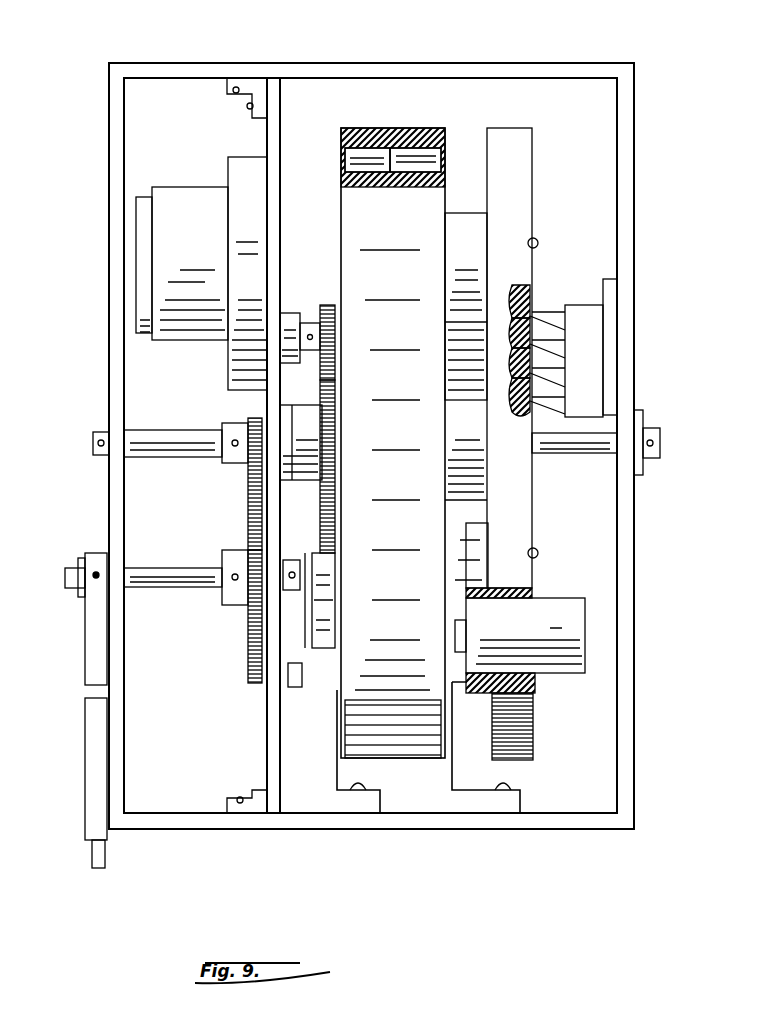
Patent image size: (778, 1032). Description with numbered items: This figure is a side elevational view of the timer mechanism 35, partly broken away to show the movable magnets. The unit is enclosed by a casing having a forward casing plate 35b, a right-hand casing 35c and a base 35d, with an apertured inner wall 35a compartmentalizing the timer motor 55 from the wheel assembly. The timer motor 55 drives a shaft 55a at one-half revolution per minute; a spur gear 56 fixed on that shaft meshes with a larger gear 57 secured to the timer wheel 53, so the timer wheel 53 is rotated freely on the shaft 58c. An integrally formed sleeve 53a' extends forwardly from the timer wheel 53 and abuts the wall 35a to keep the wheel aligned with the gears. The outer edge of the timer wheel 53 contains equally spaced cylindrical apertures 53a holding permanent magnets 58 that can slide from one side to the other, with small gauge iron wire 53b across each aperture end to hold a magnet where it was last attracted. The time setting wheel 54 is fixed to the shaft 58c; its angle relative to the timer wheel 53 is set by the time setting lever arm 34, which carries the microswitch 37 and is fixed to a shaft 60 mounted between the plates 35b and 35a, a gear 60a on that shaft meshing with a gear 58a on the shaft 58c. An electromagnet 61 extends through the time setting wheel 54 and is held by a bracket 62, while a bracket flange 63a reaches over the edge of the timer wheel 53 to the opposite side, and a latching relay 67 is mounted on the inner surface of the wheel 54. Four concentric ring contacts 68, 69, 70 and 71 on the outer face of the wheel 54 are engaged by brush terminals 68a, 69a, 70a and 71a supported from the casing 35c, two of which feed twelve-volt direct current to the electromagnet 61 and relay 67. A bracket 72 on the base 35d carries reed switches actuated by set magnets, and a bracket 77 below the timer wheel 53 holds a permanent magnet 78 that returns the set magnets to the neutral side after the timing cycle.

The timer mechanism 35 is at (386, 55).
The apertured wall 35a is at (280, 192).
The forward casing plate 35b is at (110, 232).
The right-hand casing 35c is at (638, 296).
The base 35d is at (402, 830).
The time setting lever arm 34 is at (90, 722).
The microswitch 37 is at (92, 860).
The timer wheel 53 is at (340, 216).
The apertures 53a is at (438, 168).
The sleeve 53a' is at (301, 426).
The iron wire 53b is at (342, 156).
The time setting wheel 54 is at (530, 148).
The timer motor 55 is at (160, 188).
The shaft 55a is at (300, 312).
The spur gear 56 is at (338, 322).
The gear 57 is at (338, 428).
The permanent magnets 58 is at (372, 128).
The gear 58a is at (248, 466).
The shaft 58c is at (145, 432).
The shaft 60 is at (160, 568).
The gear 60a is at (248, 642).
The electromagnet 61 is at (545, 600).
The bracket 62 is at (478, 532).
The flange portion 63a is at (315, 556).
The latching relay 67 is at (478, 262).
The ring contact 68 is at (522, 400).
The ring contact 69 is at (522, 374).
The ring contact 70 is at (522, 346).
The ring contact 71 is at (522, 320).
The brush terminal 68a is at (556, 404).
The brush terminal 69a is at (556, 376).
The brush terminal 70a is at (556, 348).
The brush terminal 71a is at (548, 314).
The bracket 72 is at (452, 796).
The bracket 77 is at (330, 773).
The permanent magnet 78 is at (296, 665).